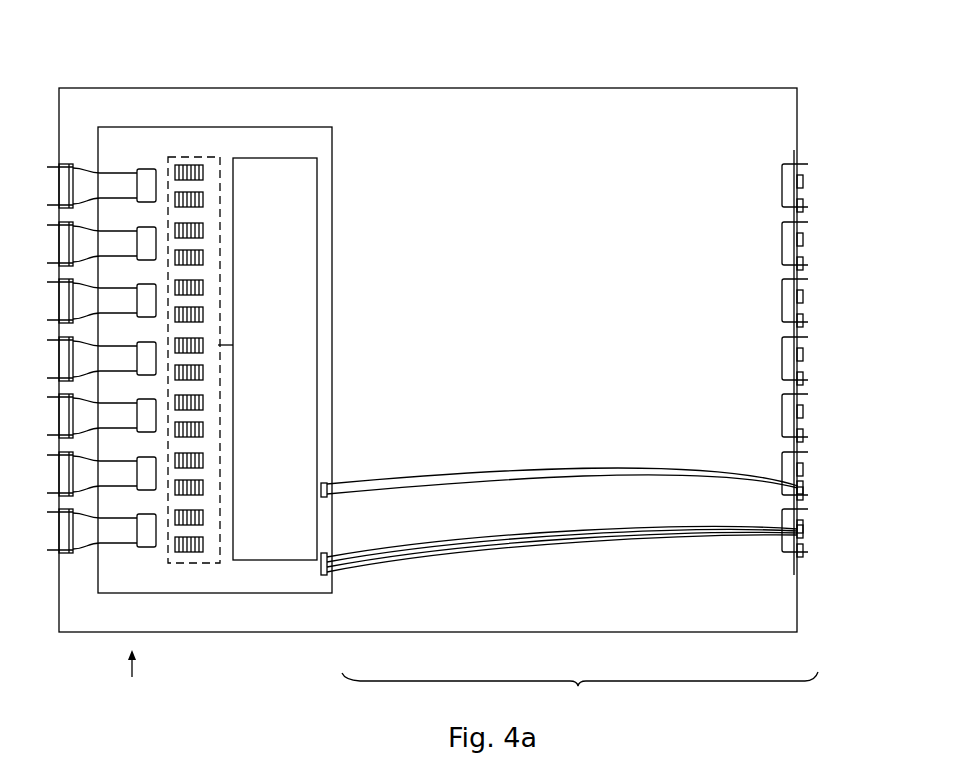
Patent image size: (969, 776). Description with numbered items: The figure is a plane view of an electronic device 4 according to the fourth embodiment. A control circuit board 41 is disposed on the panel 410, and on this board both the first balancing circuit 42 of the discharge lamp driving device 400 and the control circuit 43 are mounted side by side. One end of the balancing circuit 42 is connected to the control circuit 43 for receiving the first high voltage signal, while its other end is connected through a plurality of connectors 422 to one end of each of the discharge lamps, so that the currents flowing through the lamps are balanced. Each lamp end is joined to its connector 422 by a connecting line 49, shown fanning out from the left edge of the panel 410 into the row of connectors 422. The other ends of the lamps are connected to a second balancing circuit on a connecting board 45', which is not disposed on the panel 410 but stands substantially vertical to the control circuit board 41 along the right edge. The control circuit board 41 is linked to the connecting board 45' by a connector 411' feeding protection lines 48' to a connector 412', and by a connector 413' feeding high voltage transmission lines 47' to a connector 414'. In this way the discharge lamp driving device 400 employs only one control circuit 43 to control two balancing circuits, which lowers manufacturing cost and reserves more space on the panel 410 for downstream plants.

The electronic device 4 is at (464, 32).
The panel 410 is at (437, 88).
The control circuit board 41 is at (313, 594).
The connecting line 49 is at (108, 171).
The connector 422 is at (148, 169).
The first balancing circuit 42 is at (175, 157).
The control circuit 43 is at (276, 158).
The connector 411' is at (276, 576).
The connector 413' is at (297, 611).
The protection lines 48' is at (562, 568).
The high voltage transmission lines 47' is at (562, 598).
The connecting board 45' is at (808, 409).
The connector 412' is at (826, 503).
The connector 414' is at (826, 545).
The discharge lamp driving device 400 is at (580, 689).